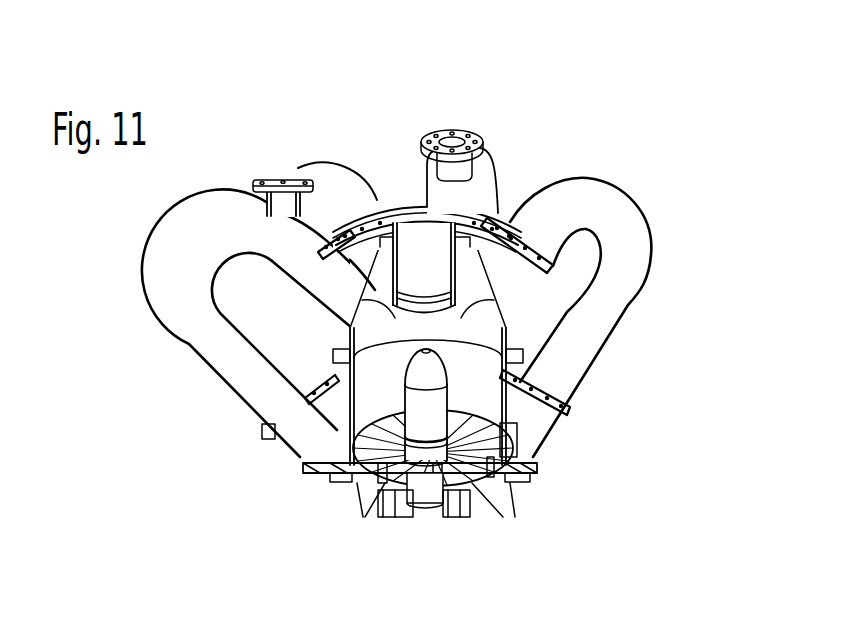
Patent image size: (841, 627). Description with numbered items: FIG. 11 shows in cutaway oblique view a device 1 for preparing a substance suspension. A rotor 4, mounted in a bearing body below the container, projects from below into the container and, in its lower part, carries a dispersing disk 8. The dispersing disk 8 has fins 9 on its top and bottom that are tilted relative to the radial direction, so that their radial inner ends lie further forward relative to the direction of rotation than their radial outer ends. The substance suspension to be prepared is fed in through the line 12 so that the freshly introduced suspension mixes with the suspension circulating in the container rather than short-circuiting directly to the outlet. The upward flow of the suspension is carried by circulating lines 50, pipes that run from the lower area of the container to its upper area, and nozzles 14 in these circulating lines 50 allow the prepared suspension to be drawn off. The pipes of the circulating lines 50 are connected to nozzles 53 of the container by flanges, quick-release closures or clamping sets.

The device 1 is at (283, 495).
The rotor 4 is at (416, 407).
The dispersing disk 8 is at (460, 471).
The fins 9 is at (517, 478).
The line 12 is at (420, 263).
The nozzles 14 is at (278, 185).
The circulating lines 50 is at (323, 175).
The nozzles of the container 53 is at (517, 273).